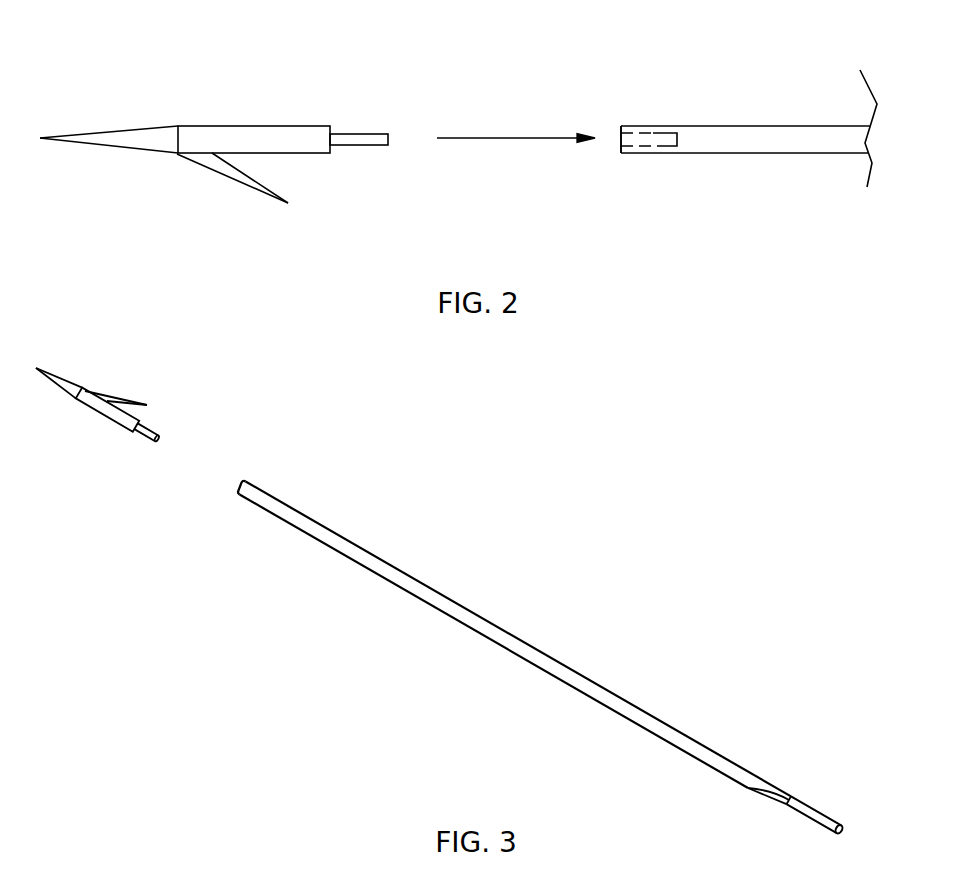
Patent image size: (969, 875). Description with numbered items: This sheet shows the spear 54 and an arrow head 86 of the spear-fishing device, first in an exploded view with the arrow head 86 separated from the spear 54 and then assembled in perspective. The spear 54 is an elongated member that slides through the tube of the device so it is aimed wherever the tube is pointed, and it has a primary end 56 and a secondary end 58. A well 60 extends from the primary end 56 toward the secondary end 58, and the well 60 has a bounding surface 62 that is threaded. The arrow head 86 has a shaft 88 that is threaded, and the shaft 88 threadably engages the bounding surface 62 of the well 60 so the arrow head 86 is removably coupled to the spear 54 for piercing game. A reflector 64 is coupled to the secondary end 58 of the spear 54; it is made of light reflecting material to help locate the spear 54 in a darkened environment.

In FIG. 2, the spear 54 is at (807, 125).
In FIG. 3, the spear 54 is at (613, 690).
In FIG. 2, the primary end 56 is at (620, 126).
In FIG. 3, the primary end 56 is at (235, 482).
In FIG. 3, the secondary end 58 is at (742, 787).
In FIG. 2, the well 60 is at (668, 147).
In FIG. 2, the bounding surface 62 is at (657, 134).
In FIG. 3, the reflector 64 is at (825, 815).
In FIG. 2, the arrow head 86 is at (255, 125).
In FIG. 3, the arrow head 86 is at (70, 380).
In FIG. 2, the shaft 88 is at (383, 133).
In FIG. 3, the shaft 88 is at (146, 441).